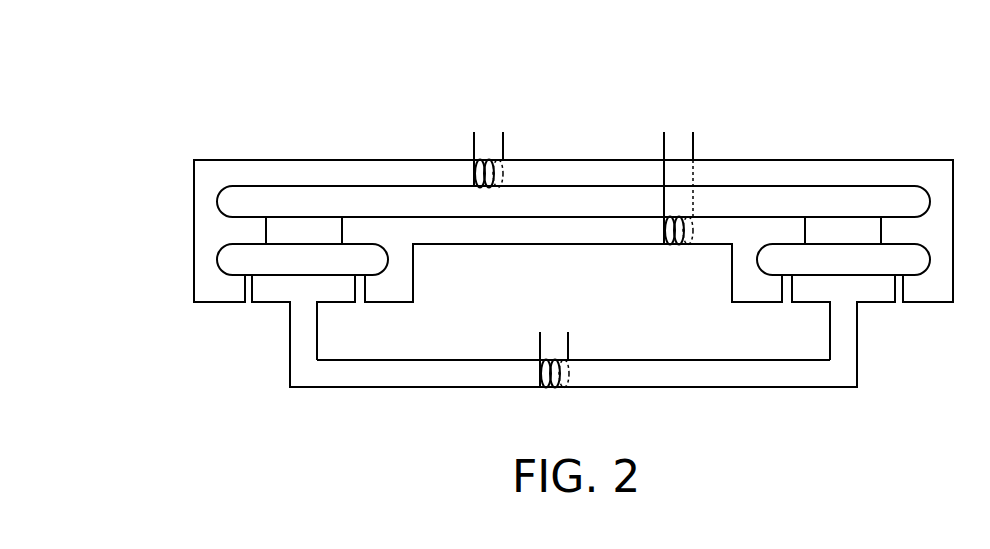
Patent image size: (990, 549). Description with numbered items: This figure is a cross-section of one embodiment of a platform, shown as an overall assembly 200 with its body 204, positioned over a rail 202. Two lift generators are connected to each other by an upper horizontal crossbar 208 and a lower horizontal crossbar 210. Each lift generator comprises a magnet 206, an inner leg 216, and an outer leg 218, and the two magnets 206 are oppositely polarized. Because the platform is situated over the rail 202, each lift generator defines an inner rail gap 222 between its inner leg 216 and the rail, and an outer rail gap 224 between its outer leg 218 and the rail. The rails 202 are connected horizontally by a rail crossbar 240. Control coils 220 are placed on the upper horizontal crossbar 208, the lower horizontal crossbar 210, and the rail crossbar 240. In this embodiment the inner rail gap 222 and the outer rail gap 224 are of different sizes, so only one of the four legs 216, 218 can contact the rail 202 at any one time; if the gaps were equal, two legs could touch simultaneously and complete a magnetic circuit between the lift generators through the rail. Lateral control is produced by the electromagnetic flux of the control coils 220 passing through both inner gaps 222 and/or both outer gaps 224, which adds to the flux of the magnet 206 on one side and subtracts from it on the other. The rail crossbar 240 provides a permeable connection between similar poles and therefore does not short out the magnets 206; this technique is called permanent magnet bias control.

The linear motor assembly 200 is at (118, 82).
The rail 202 is at (290, 372).
The housing body 204 is at (194, 172).
The magnet 206 is at (303, 217).
The upper horizontal crossbar 208 is at (368, 160).
The lower horizontal crossbar 210 is at (515, 245).
The inner leg 216 is at (414, 290).
The outer leg 218 is at (194, 288).
The control coil 220 is at (474, 145).
The inner rail gap 222 is at (787, 296).
The outer rail gap 224 is at (897, 296).
The rail crossbar 240 is at (625, 387).